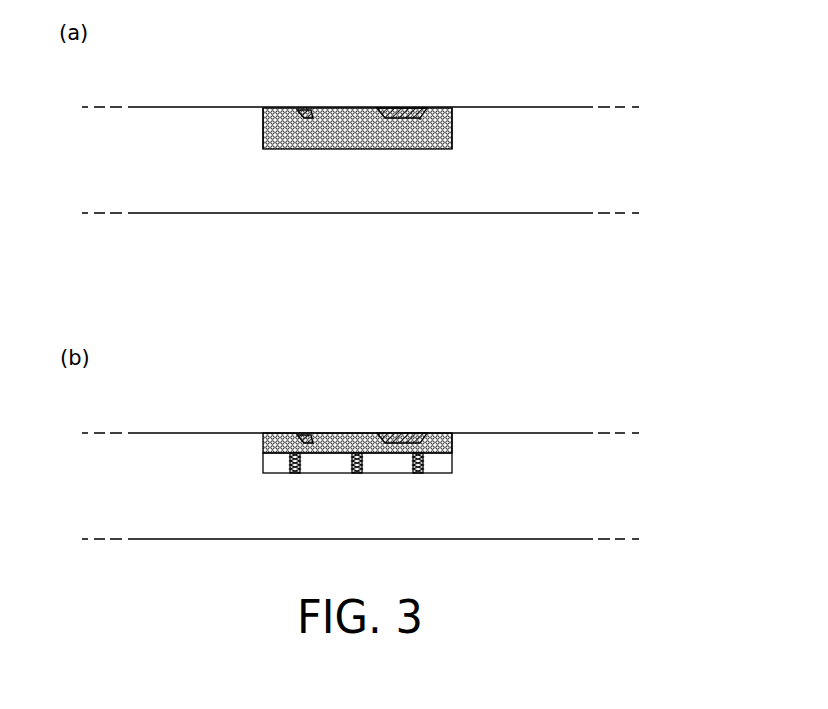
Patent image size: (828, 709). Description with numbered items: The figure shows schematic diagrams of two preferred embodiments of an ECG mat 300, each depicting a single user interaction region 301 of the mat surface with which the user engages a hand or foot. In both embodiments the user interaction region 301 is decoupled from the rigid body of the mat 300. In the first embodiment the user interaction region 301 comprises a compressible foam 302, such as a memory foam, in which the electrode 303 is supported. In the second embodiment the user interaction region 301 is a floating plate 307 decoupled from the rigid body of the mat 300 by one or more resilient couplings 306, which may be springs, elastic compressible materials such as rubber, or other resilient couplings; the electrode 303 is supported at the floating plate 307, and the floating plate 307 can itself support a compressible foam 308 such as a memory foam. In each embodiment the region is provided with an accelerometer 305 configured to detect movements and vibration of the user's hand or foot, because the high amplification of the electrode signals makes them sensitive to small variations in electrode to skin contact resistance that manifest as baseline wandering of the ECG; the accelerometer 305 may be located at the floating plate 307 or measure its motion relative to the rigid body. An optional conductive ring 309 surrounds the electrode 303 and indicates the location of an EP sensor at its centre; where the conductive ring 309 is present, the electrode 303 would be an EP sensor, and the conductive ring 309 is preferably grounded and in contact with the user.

The mat 300 is at (187, 200).
The user interaction region 301 is at (339, 85).
The compressible foam 302 is at (283, 108).
The electrode 303 is at (409, 107).
The accelerometer 305 is at (305, 118).
The resilient couplings 306 is at (290, 462).
The floating plate 307 is at (328, 455).
The compressible foam 308 is at (451, 441).
The conductive ring 309 is at (430, 118).